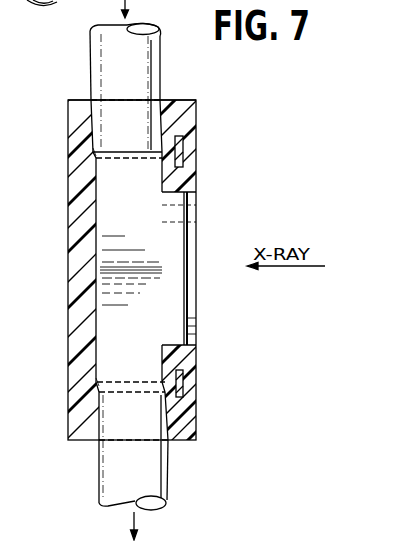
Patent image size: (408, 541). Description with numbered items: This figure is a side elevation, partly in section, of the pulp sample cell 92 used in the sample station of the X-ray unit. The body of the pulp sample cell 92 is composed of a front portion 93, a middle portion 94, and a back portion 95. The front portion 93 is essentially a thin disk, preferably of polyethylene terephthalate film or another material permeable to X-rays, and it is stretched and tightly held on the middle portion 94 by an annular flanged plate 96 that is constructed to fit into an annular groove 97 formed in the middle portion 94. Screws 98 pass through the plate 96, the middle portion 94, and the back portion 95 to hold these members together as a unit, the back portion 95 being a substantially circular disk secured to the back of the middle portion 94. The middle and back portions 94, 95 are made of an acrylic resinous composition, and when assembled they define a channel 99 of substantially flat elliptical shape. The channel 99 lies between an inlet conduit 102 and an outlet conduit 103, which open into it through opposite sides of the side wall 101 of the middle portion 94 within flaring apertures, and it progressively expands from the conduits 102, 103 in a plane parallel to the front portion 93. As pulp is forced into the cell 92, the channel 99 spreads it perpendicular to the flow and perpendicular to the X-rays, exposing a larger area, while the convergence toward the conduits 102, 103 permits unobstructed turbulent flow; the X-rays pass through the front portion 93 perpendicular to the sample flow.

The pulp sample cell 92 is at (214, 148).
The front portion 93 is at (184, 245).
The middle portion 94 is at (173, 104).
The back portion 95 is at (73, 177).
The annular flanged plate 96 is at (194, 123).
The annular groove 97 is at (183, 162).
The screws 98 is at (96, 143).
The channel 99 is at (98, 220).
The side wall 101 is at (68, 100).
The inlet conduit 102 is at (103, 68).
The outlet conduit 103 is at (155, 482).